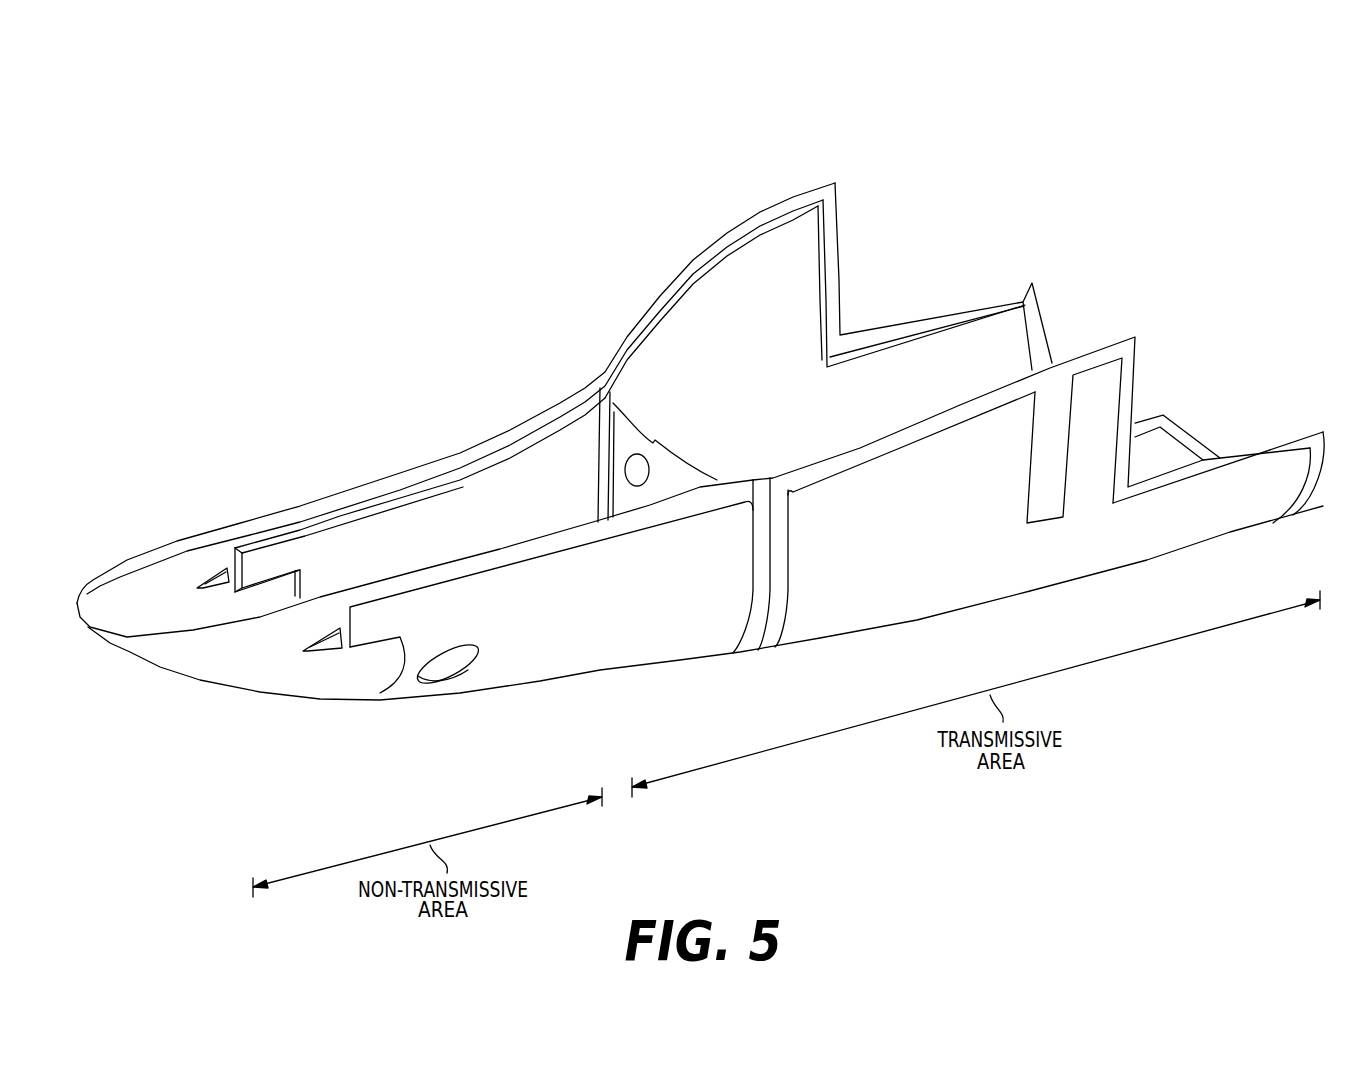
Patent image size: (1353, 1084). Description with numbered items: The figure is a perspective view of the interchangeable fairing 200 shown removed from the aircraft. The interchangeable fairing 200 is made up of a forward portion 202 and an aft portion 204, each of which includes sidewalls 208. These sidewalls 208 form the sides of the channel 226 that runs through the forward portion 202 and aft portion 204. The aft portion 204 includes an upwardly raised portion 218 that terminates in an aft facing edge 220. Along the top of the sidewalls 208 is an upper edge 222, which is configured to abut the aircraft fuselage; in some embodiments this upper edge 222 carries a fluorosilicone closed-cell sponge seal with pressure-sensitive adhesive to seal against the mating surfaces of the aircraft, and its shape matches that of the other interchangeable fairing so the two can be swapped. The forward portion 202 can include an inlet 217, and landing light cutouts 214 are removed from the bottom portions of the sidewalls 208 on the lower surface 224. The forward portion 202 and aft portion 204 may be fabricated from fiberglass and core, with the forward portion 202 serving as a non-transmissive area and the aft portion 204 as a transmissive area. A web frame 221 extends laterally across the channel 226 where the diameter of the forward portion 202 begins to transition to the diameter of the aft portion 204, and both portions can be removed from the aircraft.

The interchangeable fairing 200 is at (296, 256).
The forward portion 202 is at (249, 435).
The aft portion 204 is at (762, 126).
The sidewalls 208 is at (473, 517).
The landing light cutouts 214 is at (430, 680).
The inlet 217 is at (310, 643).
The upwardly raised portion 218 is at (764, 312).
The aft facing edge 220 is at (840, 253).
The web frame 221 is at (603, 392).
The upper edge 222 is at (410, 583).
The lower surface 224 is at (500, 677).
The channel 226 is at (1110, 283).